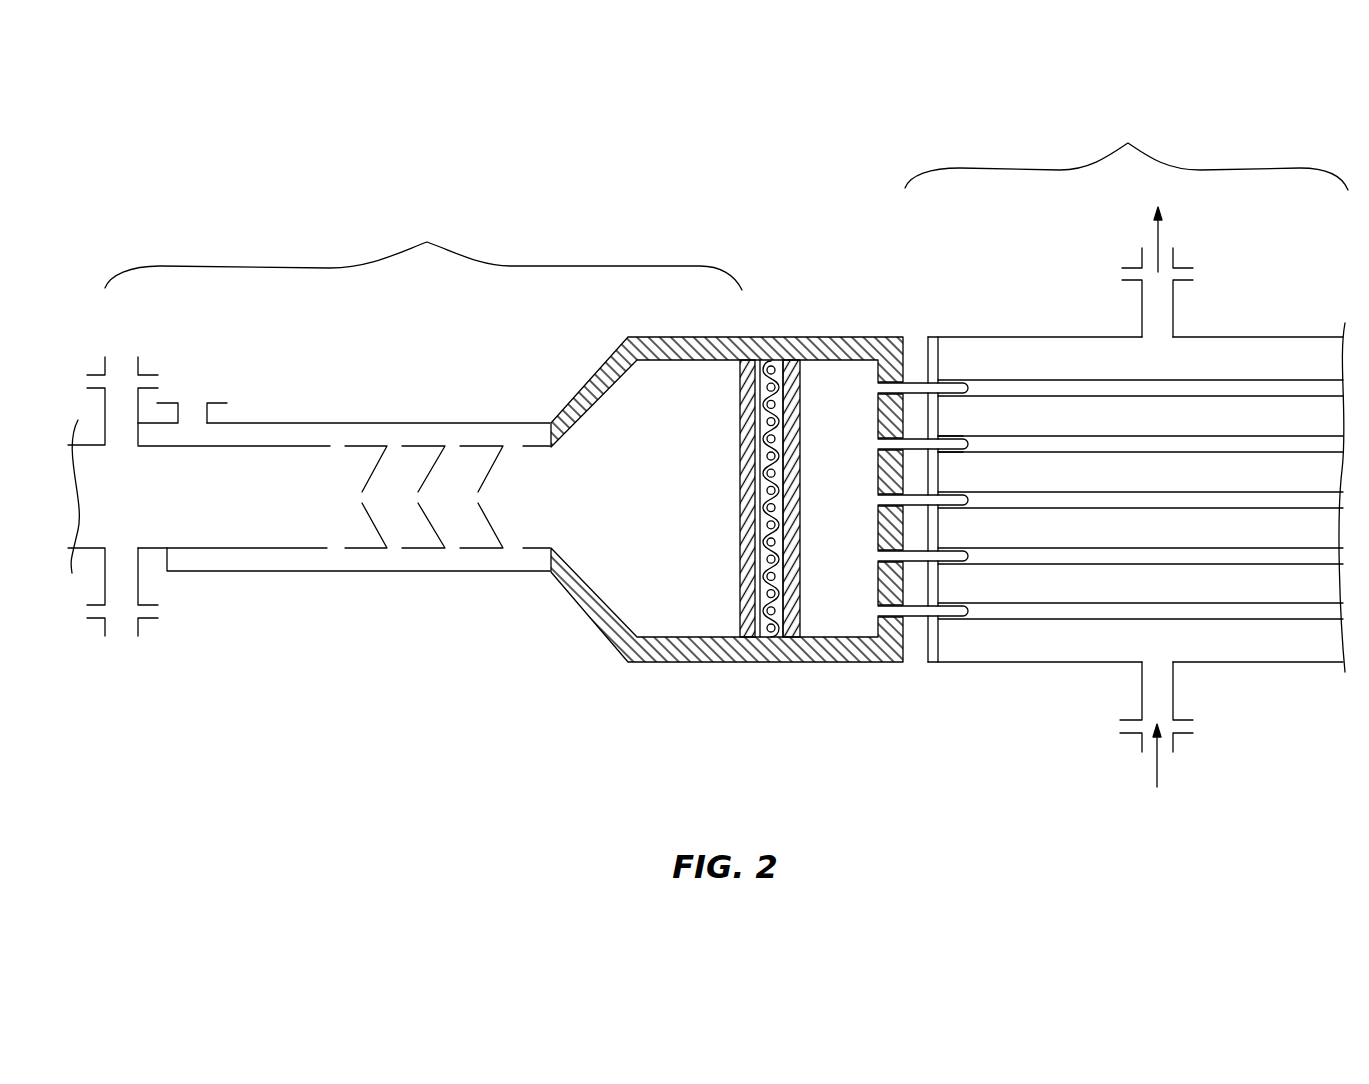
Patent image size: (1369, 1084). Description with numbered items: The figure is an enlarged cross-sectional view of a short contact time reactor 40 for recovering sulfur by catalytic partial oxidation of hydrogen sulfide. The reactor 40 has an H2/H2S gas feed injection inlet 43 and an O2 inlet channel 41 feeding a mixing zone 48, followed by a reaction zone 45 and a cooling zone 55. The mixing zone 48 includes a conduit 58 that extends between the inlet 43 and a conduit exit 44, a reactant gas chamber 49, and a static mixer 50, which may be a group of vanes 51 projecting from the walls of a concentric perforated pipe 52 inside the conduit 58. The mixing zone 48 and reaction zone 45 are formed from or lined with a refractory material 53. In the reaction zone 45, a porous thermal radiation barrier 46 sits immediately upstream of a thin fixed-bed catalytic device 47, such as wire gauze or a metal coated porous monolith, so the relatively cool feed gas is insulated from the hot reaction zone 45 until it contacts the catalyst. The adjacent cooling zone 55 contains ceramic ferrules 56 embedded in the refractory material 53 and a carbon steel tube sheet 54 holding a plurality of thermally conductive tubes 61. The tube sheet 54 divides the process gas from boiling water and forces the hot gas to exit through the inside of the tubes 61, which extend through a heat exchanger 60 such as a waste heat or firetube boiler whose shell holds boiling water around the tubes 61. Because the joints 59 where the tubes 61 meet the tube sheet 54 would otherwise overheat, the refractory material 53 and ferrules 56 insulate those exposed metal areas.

The reactor 40 is at (910, 258).
The O2 inlet channel 41 is at (192, 410).
The H2/H2S gas feed injection inlet 43 is at (118, 365).
The conduit exit 44 is at (527, 505).
The reaction zone 45 is at (746, 461).
The thermal radiation barrier 46 is at (782, 355).
The catalytic device 47 is at (762, 465).
The mixing zone 48 is at (423, 252).
The reactant gas chamber 49 is at (614, 402).
The static mixer 50 is at (430, 467).
The vanes 51 is at (435, 537).
The concentric perforated pipe 52 is at (328, 549).
The refractory material 53 is at (595, 610).
The tube sheet 54 is at (918, 660).
The cooling zone 55 is at (1126, 470).
The ceramic ferrules 56 is at (947, 612).
The conduit 58 is at (427, 422).
The joints 59 is at (930, 452).
The heat exchanger 60 is at (1247, 337).
The thermally conductive tubes 61 is at (1018, 445).